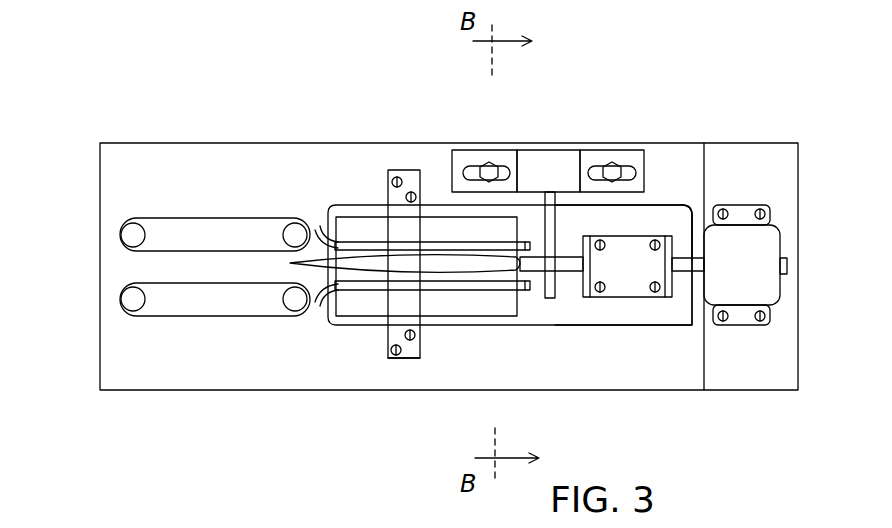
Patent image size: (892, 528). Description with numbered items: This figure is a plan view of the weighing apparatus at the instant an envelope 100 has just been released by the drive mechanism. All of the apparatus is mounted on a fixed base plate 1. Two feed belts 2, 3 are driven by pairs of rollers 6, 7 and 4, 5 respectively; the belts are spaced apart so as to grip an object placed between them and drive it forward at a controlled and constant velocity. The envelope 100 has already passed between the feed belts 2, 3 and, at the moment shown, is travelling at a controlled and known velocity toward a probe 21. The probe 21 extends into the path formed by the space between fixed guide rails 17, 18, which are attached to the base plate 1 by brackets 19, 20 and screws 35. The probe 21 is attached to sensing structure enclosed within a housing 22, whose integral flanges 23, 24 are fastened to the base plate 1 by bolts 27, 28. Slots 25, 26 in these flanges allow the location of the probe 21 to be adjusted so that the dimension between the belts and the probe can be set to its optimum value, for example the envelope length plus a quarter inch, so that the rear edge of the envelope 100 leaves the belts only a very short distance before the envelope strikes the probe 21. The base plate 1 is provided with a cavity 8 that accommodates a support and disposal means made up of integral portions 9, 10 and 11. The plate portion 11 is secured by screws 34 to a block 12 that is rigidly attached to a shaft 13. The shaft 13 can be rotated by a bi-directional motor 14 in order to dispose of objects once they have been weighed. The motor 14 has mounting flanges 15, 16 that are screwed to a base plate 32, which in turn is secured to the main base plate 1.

The fixed base plate 1 is at (136, 155).
The feed belt 2 is at (157, 218).
The feed belt 3 is at (176, 317).
The roller 4 is at (286, 301).
The roller 5 is at (130, 298).
The roller 6 is at (130, 234).
The roller 7 is at (295, 229).
The cavity 8 is at (690, 325).
The support and disposal means portion 9 is at (488, 303).
The support and disposal means portion 10 is at (566, 272).
The plate portion 11 is at (668, 293).
The block 12 is at (632, 284).
The shaft 13 is at (682, 258).
The bi-directional motor 14 is at (770, 256).
The mounting flange 15 is at (748, 212).
The mounting flange 16 is at (748, 321).
The fixed guide rail 17 is at (352, 247).
The fixed guide rail 18 is at (368, 290).
The bracket 19 is at (412, 172).
The bracket 20 is at (404, 358).
The probe 21 is at (555, 236).
The housing 22 is at (558, 165).
The flange 23 is at (467, 161).
The flange 24 is at (632, 160).
The slot 25 is at (482, 172).
The slot 26 is at (638, 180).
The bolt 27 is at (492, 170).
The bolt 28 is at (617, 172).
The base plate 32 is at (771, 383).
The screws 34 is at (649, 287).
The screws 35 is at (400, 172).
The envelope 100 is at (293, 265).